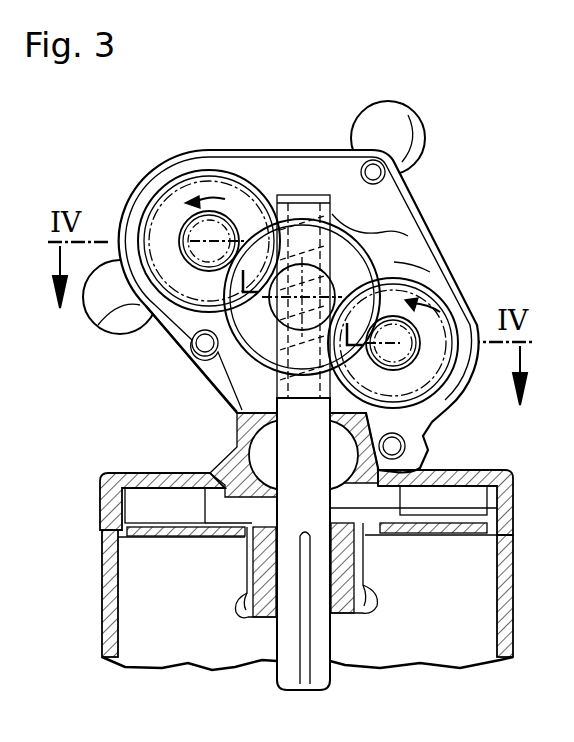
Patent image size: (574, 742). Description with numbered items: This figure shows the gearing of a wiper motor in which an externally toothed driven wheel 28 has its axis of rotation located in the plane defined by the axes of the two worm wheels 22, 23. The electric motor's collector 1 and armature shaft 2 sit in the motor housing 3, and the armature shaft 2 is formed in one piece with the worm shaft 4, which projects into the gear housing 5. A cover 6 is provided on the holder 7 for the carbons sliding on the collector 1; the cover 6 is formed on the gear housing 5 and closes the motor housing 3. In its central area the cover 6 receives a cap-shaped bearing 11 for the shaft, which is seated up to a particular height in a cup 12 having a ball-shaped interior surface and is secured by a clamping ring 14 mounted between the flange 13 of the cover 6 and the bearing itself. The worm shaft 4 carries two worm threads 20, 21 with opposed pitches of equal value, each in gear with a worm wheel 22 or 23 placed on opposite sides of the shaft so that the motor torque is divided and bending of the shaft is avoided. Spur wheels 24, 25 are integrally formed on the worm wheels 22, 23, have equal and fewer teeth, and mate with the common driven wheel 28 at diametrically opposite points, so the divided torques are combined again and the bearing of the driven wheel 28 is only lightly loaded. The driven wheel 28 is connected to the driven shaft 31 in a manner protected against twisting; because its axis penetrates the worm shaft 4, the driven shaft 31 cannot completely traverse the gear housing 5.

The collector 1 is at (365, 568).
The armature shaft 2 is at (326, 640).
The motor housing 3 is at (500, 633).
The worm shaft 4 is at (318, 190).
The gear housing 5 is at (464, 290).
The cover 6 is at (144, 478).
The holder 7 is at (175, 538).
The cap-shaped bearing 11 is at (242, 455).
The cup 12 is at (240, 421).
The flange 13 is at (207, 491).
The clamping ring 14 is at (228, 538).
The worm thread 20 is at (216, 379).
The worm thread 21 is at (383, 232).
The worm wheel 22 is at (430, 378).
The worm wheel 23 is at (118, 318).
The spur wheel 24 is at (405, 353).
The spur wheel 25 is at (203, 233).
The driven wheel 28 is at (410, 262).
The driven shaft 31 is at (205, 370).